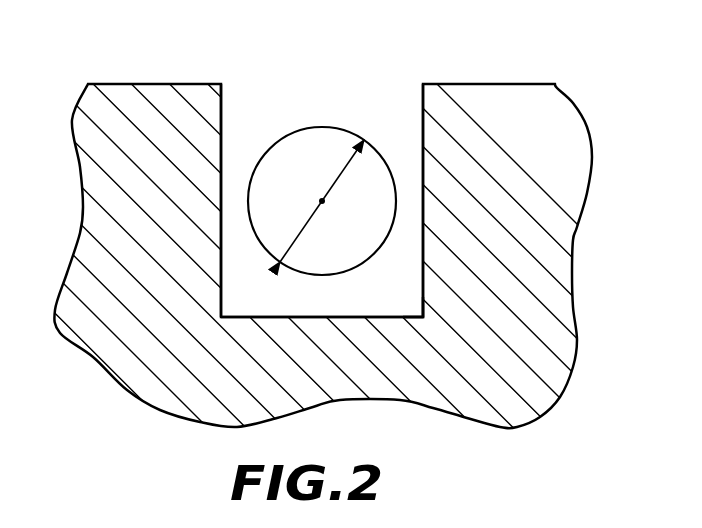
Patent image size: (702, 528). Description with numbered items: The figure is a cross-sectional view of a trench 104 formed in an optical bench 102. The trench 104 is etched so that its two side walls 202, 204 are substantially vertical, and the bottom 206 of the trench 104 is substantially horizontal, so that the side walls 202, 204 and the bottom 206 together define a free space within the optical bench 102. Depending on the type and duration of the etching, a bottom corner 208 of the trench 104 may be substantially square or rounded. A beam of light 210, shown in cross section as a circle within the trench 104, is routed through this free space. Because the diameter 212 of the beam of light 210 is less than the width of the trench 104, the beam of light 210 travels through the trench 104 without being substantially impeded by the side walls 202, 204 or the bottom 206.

The optical bench 102 is at (155, 95).
The trench 104 is at (302, 88).
The side wall 202 is at (221, 128).
The side wall 204 is at (423, 137).
The bottom 206 is at (282, 317).
The bottom corner 208 is at (414, 307).
The beam of light 210 is at (337, 128).
The diameter 212 is at (300, 235).